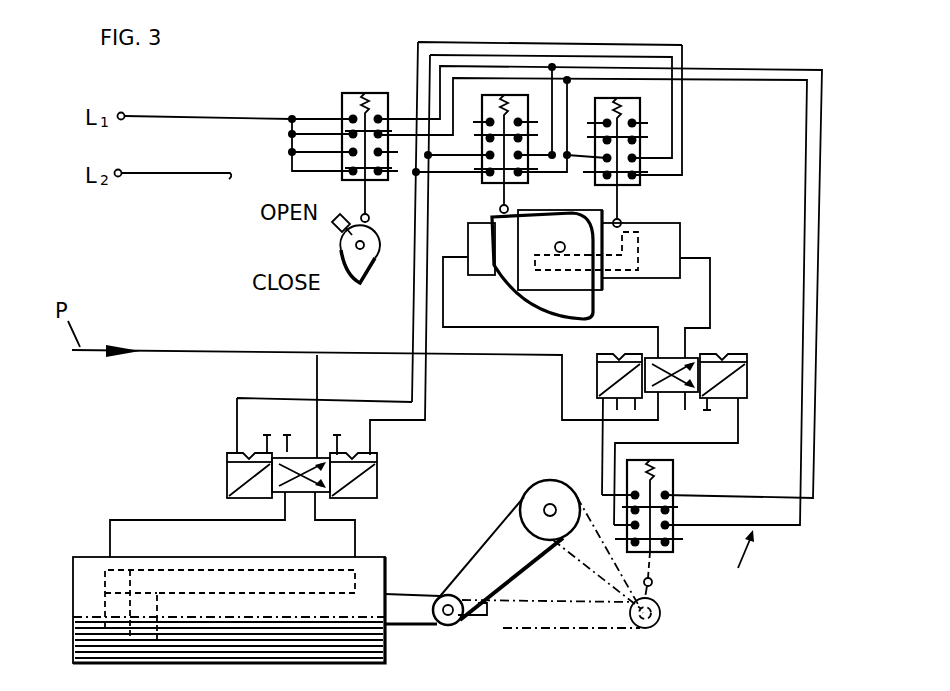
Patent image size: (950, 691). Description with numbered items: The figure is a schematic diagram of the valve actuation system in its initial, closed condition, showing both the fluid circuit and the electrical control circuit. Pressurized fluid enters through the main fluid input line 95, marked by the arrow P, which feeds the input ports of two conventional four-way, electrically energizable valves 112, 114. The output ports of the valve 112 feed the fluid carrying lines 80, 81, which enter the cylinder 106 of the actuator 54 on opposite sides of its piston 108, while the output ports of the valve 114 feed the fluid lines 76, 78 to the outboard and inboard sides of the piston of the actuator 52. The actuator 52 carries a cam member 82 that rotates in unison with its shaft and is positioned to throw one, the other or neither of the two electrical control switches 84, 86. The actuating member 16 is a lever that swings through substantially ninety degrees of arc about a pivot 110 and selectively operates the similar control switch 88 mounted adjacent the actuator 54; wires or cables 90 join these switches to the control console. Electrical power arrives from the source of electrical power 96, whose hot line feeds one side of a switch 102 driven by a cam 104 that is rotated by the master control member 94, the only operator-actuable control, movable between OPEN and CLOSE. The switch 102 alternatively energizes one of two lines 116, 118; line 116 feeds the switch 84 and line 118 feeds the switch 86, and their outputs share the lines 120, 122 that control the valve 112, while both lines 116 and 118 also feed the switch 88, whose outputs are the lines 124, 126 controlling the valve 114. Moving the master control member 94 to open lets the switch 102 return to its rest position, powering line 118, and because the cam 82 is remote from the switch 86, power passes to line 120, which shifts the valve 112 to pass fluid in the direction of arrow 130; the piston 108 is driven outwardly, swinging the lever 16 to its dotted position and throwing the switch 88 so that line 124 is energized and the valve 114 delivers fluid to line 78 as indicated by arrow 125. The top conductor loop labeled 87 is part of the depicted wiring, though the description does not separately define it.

The actuating member 16 is at (490, 535).
The actuator 52 is at (698, 234).
The actuator 54 is at (80, 545).
The fluid line 76 is at (710, 278).
The fluid line 78 is at (640, 327).
The fluid carrying line 80 is at (353, 546).
The fluid carrying line 81 is at (130, 520).
The cam member 82 is at (515, 296).
The electrical control switch 84 is at (520, 183).
The electrical control switch 86 is at (638, 188).
The conductor 87 is at (570, 38).
The control switch 88 is at (673, 468).
The wires or cables 90 is at (739, 561).
The master control member 94 is at (340, 230).
The main fluid input line 95 is at (175, 347).
The source of electrical power 96 is at (153, 173).
The switch 102 is at (343, 93).
The cam 104 is at (375, 252).
The cylinder 106 is at (392, 558).
The piston 108 is at (153, 666).
The pivot 110 is at (547, 508).
The four-way electrically energizable valve 112 is at (227, 471).
The four-way electrically energizable valve 114 is at (747, 363).
The line 116 is at (416, 118).
The line 118 is at (398, 152).
The line 120 is at (430, 175).
The line 122 is at (458, 152).
The line 124 is at (738, 443).
The arrow 125 is at (653, 372).
The line 126 is at (601, 470).
The arrow 130 is at (320, 498).